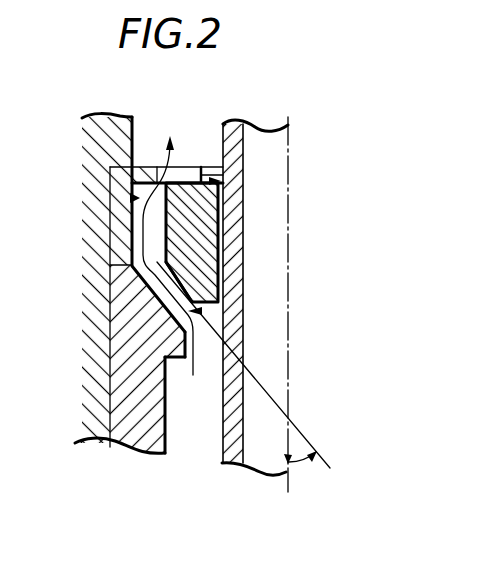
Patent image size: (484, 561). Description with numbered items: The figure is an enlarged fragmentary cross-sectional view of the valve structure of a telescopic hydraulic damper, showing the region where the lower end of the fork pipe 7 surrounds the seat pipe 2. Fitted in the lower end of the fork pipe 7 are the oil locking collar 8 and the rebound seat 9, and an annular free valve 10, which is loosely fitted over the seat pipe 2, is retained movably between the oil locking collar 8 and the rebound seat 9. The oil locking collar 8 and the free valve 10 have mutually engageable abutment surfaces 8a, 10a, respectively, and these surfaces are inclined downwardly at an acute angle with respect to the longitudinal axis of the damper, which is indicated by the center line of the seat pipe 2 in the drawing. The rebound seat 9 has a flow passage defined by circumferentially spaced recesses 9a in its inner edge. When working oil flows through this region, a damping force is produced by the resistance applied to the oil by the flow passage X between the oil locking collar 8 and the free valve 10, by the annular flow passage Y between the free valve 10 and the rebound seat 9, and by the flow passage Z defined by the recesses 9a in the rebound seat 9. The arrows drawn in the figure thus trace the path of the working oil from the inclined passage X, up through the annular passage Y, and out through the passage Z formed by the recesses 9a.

The seat pipe 2 is at (230, 336).
The fork pipe 7 is at (110, 146).
The oil locking collar 8 is at (110, 388).
The abutment surface 8a is at (163, 305).
The rebound seat 9 is at (112, 228).
The recesses 9a is at (204, 169).
The free valve 10 is at (200, 227).
The abutment surface 10a is at (182, 287).
The flow passage X is at (202, 311).
The annular flow passage Y is at (132, 198).
The flow passage Z is at (212, 182).